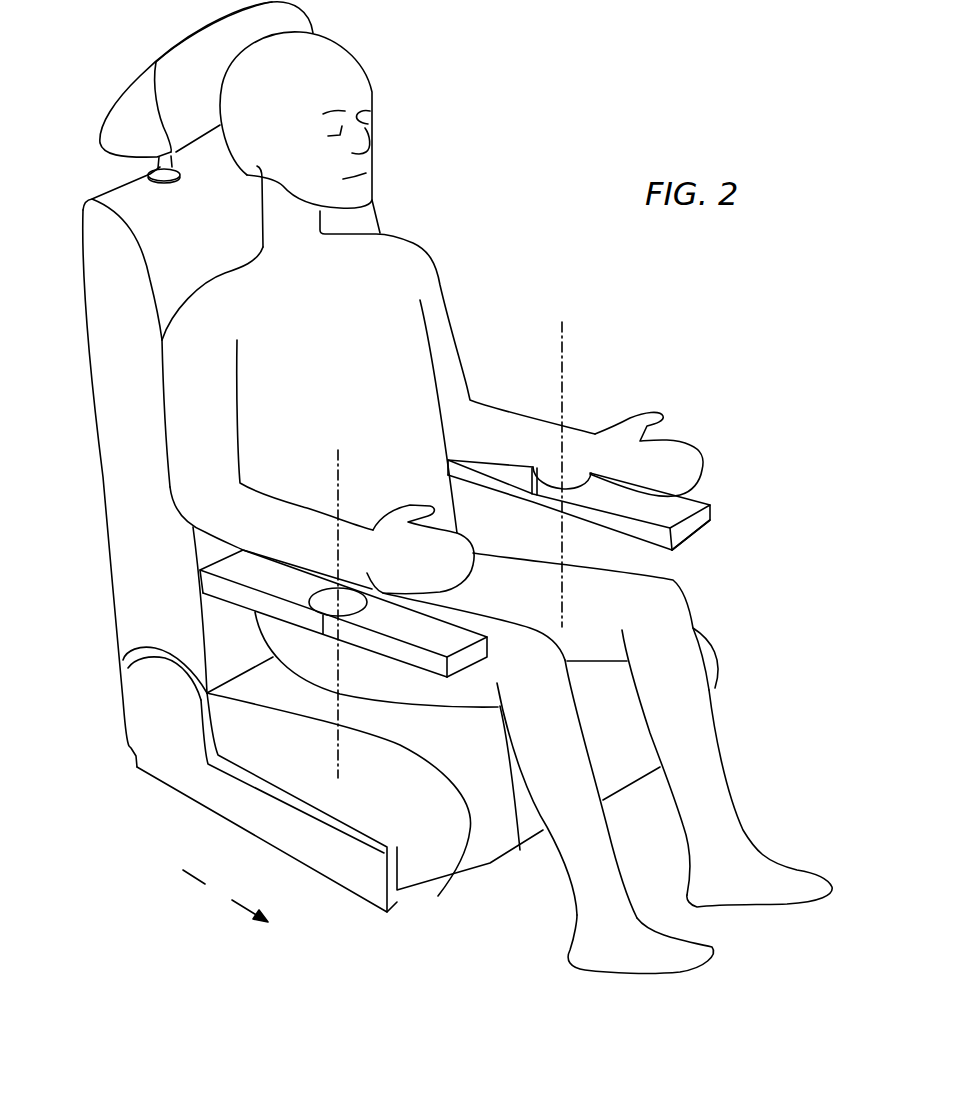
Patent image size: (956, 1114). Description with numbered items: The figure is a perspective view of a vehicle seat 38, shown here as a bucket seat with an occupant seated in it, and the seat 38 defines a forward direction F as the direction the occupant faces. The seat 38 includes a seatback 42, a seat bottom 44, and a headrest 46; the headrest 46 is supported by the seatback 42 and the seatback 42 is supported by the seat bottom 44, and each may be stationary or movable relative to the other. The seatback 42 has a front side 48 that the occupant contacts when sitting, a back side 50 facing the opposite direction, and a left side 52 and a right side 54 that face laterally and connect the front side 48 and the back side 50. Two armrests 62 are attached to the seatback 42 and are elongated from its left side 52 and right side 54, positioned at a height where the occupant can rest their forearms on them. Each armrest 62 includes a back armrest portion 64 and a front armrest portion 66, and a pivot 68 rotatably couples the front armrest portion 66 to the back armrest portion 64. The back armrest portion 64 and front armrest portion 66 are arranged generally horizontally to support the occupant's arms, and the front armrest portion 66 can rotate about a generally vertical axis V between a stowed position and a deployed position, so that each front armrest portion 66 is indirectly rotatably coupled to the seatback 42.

The seat 38 is at (433, 125).
The seatback 42 is at (83, 293).
The seat bottom 44 is at (717, 660).
The headrest 46 is at (132, 68).
The front side 48 is at (153, 297).
The back side 50 is at (100, 440).
The left side 52 is at (380, 213).
The right side 54 is at (115, 478).
The armrest 62 is at (223, 603).
The back armrest portion 64 is at (268, 640).
The front armrest portion 66 is at (397, 663).
The pivot 68 is at (355, 590).